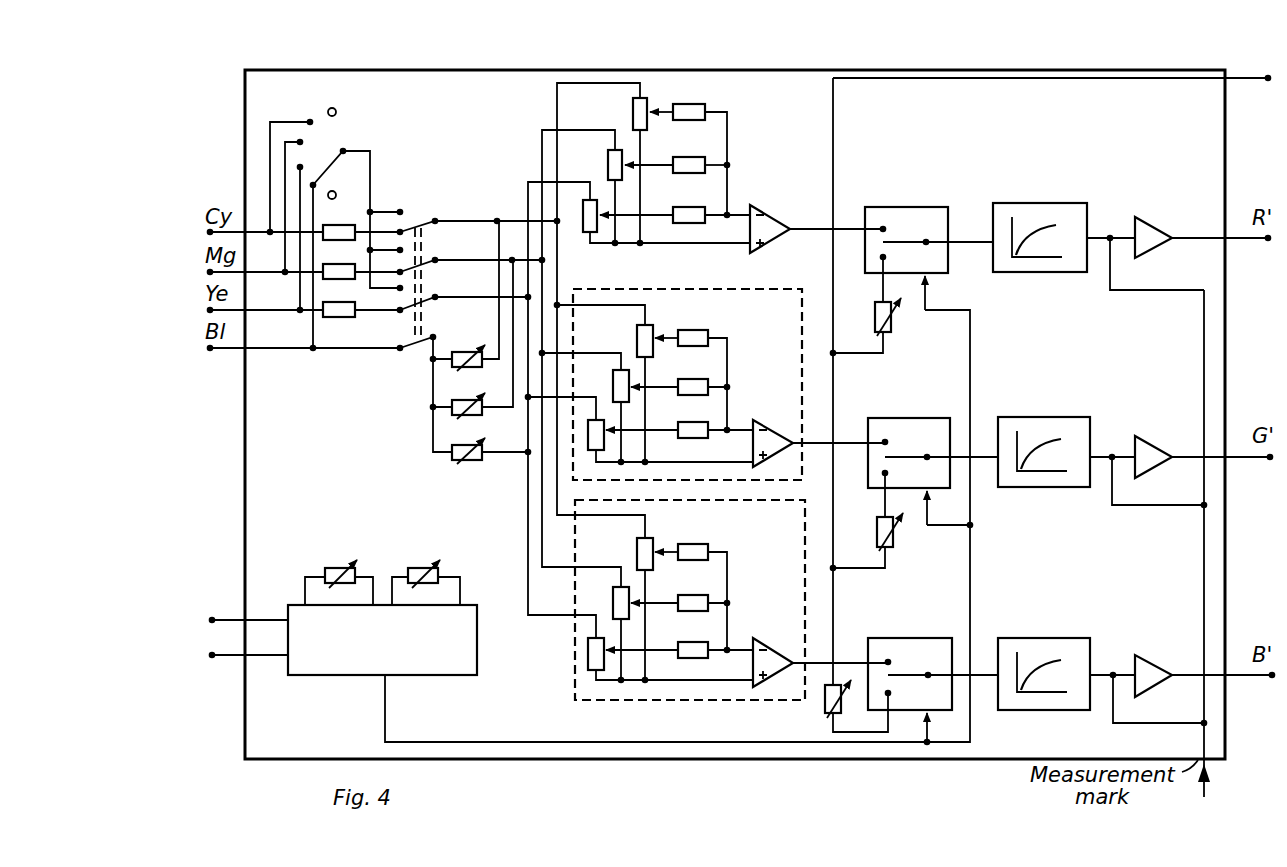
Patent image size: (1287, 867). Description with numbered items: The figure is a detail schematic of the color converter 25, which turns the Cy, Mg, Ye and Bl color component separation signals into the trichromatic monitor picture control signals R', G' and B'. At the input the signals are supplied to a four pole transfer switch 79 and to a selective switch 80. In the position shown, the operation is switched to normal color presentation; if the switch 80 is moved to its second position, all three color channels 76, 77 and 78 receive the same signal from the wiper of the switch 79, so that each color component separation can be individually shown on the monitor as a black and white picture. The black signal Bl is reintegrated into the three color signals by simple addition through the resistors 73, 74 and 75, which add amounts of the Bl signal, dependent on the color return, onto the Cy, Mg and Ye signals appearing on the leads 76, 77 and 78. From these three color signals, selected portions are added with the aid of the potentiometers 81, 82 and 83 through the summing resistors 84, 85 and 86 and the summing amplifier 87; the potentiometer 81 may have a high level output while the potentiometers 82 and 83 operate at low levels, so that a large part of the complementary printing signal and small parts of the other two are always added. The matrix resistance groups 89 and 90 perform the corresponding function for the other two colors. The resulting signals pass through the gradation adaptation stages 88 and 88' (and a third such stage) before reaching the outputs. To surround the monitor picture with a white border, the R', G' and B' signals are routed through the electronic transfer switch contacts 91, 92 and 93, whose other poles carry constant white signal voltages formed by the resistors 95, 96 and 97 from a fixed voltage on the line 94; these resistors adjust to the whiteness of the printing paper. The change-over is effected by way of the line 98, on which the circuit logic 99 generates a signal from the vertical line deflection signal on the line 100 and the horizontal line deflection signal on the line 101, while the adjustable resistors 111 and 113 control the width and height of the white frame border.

The color converter 25 is at (1207, 141).
The resistor 73 is at (478, 461).
The resistor 74 is at (476, 339).
The resistor 75 is at (461, 348).
The lead 76 is at (462, 220).
The lead 77 is at (450, 253).
The lead 78 is at (453, 296).
The four pole transfer switch 79 is at (323, 143).
The selective switch 80 is at (419, 213).
The potentiometer 81 is at (637, 112).
The potentiometer 82 is at (612, 160).
The potentiometer 83 is at (582, 227).
The summing resistor 84 is at (690, 110).
The summing resistor 85 is at (685, 162).
The summing resistor 86 is at (683, 208).
The summing amplifier 87 is at (772, 217).
The gradation adaptation stage 88 is at (1098, 227).
The gradation adaptation stage 88' is at (1102, 442).
The matrix resistance group 89 is at (678, 295).
The matrix resistance group 90 is at (591, 692).
The electronic transfer switch contact 91 is at (903, 214).
The electronic transfer switch contact 92 is at (903, 417).
The electronic transfer switch contact 93 is at (908, 650).
The line 94 is at (1235, 78).
The resistor 95 is at (873, 309).
The resistor 96 is at (895, 543).
The resistor 97 is at (822, 703).
The line 98 is at (726, 742).
The circuit logic 99 is at (460, 665).
The line 100 is at (231, 613).
The line 101 is at (231, 661).
The adjustable resistor 111 is at (332, 565).
The adjustable resistor 113 is at (423, 565).